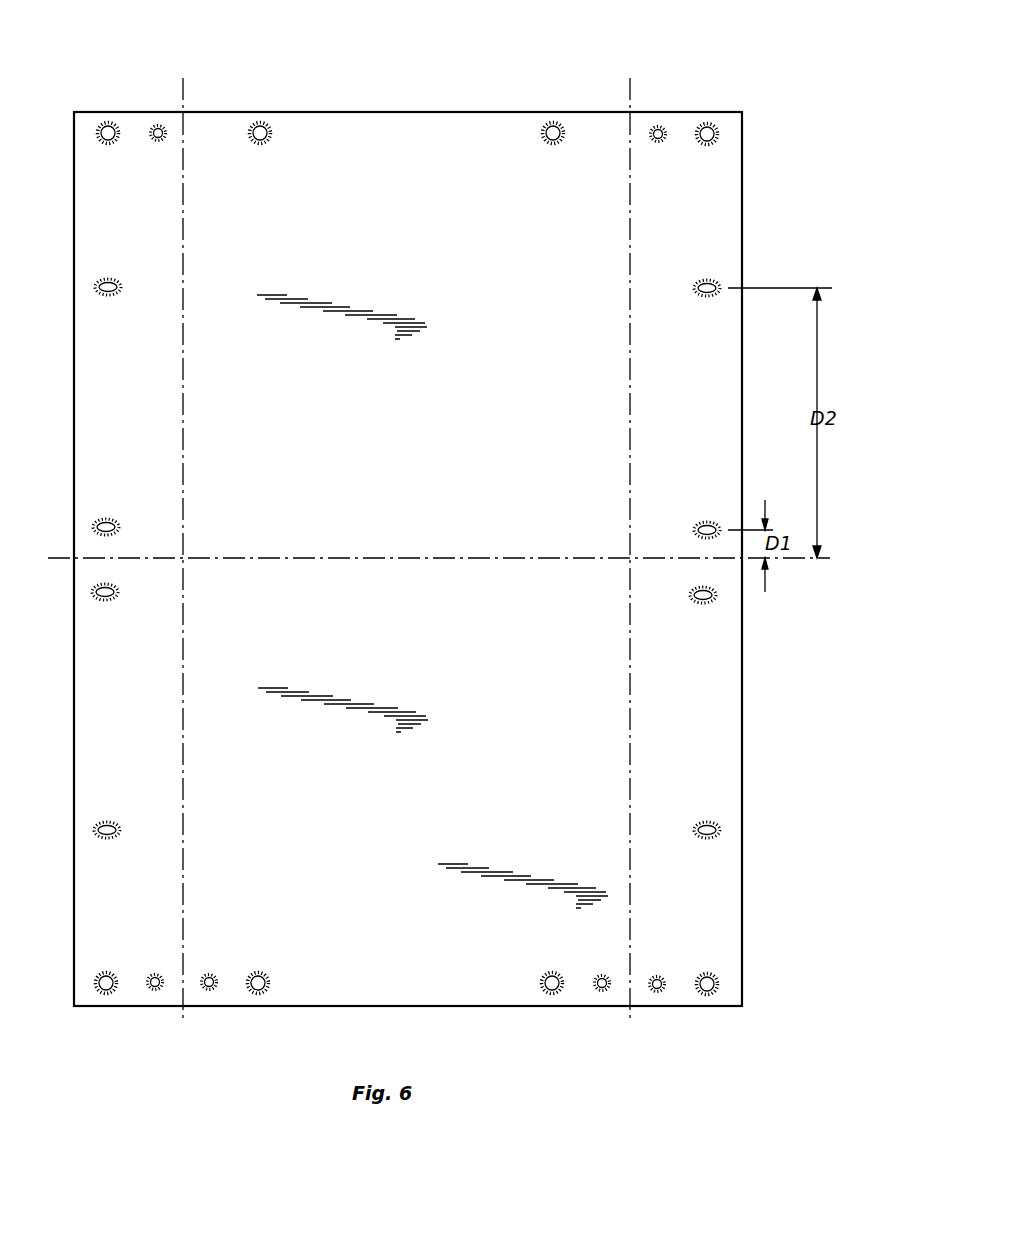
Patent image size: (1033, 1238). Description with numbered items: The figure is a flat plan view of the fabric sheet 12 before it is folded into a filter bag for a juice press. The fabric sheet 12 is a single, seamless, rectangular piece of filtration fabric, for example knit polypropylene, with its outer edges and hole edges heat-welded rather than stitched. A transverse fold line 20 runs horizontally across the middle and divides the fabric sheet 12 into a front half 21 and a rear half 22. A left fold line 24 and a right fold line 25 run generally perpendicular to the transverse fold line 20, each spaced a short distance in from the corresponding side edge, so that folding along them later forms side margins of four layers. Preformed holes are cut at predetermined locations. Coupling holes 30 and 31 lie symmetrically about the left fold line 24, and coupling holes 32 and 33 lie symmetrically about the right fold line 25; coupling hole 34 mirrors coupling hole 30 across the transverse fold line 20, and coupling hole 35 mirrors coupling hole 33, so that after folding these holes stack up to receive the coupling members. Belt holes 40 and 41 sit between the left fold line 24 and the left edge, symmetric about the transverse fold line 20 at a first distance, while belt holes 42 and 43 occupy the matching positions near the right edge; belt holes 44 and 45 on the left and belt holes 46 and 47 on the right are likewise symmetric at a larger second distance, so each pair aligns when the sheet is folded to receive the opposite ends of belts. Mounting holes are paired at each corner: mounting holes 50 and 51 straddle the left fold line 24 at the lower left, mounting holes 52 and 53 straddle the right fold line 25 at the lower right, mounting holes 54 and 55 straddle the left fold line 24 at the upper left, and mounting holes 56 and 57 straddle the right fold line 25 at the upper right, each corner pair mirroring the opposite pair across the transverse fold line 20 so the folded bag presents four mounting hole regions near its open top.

The fabric sheet 12 is at (148, 70).
The transverse fold line 20 is at (412, 558).
The front half 21 is at (419, 808).
The rear half 22 is at (414, 264).
The left fold line 24 is at (183, 686).
The right fold line 25 is at (630, 688).
The coupling hole 30 is at (155, 978).
The coupling hole 31 is at (209, 978).
The coupling hole 32 is at (602, 979).
The coupling hole 33 is at (657, 980).
The coupling hole 34 is at (157, 139).
The coupling hole 35 is at (658, 140).
The belt hole 40 is at (97, 598).
The belt hole 41 is at (97, 527).
The belt hole 42 is at (708, 601).
The belt hole 43 is at (707, 526).
The belt hole 44 is at (98, 832).
The belt hole 45 is at (99, 288).
The belt hole 46 is at (712, 830).
The belt hole 47 is at (707, 285).
The mounting hole 50 is at (106, 988).
The mounting hole 51 is at (258, 989).
The mounting hole 52 is at (552, 989).
The mounting hole 53 is at (707, 990).
The mounting hole 54 is at (108, 128).
The mounting hole 55 is at (260, 128).
The mounting hole 56 is at (553, 128).
The mounting hole 57 is at (707, 129).